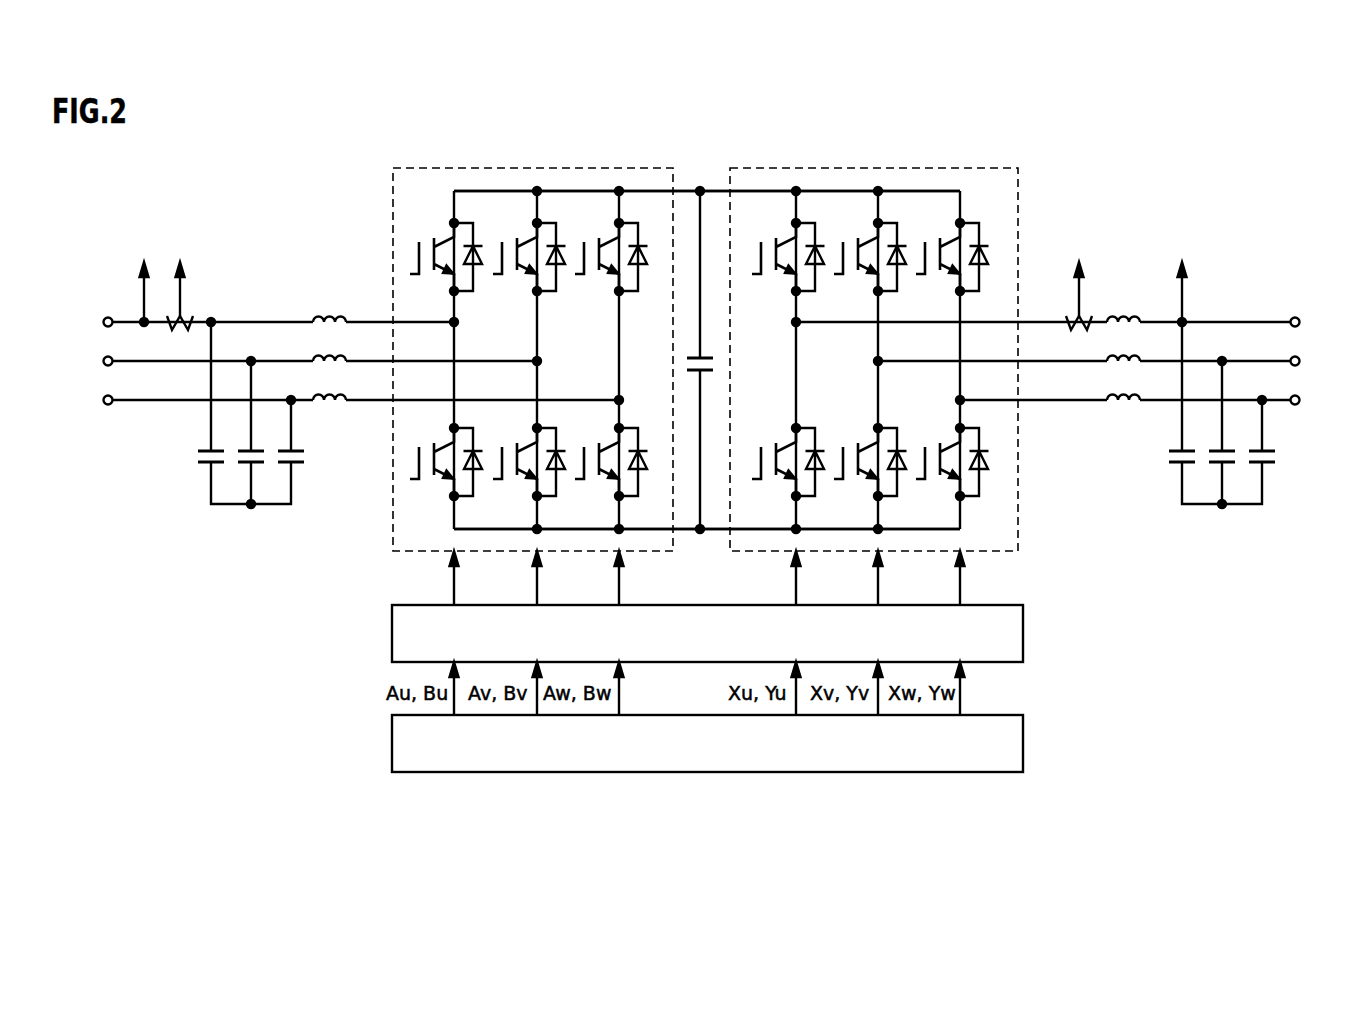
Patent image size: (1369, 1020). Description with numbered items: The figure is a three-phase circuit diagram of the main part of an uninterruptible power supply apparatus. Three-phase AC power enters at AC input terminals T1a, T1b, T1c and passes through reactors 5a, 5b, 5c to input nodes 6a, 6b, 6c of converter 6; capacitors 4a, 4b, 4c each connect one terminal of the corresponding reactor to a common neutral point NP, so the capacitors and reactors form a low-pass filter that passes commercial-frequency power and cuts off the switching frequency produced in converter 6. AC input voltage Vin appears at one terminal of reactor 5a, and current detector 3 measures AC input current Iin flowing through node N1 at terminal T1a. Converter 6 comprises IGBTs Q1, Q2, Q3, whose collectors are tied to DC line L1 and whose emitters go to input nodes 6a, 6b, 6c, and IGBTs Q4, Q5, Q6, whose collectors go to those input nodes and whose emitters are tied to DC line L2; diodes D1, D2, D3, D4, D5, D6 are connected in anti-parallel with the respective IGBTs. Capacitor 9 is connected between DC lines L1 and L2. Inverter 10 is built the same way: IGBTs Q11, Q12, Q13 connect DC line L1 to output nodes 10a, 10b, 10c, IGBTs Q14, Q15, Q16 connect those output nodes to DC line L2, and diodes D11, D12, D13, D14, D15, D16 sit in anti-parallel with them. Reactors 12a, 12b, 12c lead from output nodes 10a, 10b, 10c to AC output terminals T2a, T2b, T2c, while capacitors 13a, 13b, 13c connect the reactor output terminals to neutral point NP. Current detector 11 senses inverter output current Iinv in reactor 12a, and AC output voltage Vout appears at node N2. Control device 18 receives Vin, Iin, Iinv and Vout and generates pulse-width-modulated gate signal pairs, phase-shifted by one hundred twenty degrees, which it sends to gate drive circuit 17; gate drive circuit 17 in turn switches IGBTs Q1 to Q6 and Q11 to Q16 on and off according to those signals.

The AC input terminal T1a is at (104, 316).
The AC input terminal T1b is at (104, 355).
The AC input terminal T1c is at (104, 394).
The node N1 is at (136, 304).
The AC input voltage Vin is at (142, 280).
The AC input current Iin is at (176, 277).
The current detector 3 is at (189, 313).
The capacitor 4a is at (218, 447).
The capacitor 4b is at (258, 447).
The capacitor 4c is at (298, 447).
The neutral point NP is at (251, 509).
The reactor 5a is at (333, 312).
The reactor 5b is at (333, 351).
The reactor 5c is at (333, 390).
The input node 6a is at (392, 320).
The input node 6b is at (392, 359).
The input node 6c is at (392, 398).
The converter 6 is at (537, 167).
The IGBT Q1 is at (445, 237).
The IGBT Q2 is at (528, 237).
The IGBT Q3 is at (610, 237).
The IGBT Q4 is at (445, 442).
The IGBT Q5 is at (528, 442).
The IGBT Q6 is at (610, 442).
The diode D1 is at (481, 268).
The diode D2 is at (564, 268).
The diode D3 is at (646, 268).
The diode D4 is at (481, 473).
The diode D5 is at (564, 473).
The diode D6 is at (646, 473).
The DC line L1 is at (713, 189).
The DC line L2 is at (713, 533).
The capacitor 9 is at (704, 355).
The inverter 10 is at (880, 168).
The IGBT Q11 is at (788, 238).
The IGBT Q12 is at (870, 238).
The IGBT Q13 is at (952, 238).
The IGBT Q14 is at (788, 442).
The IGBT Q15 is at (870, 442).
The IGBT Q16 is at (952, 442).
The diode D11 is at (821, 270).
The diode D12 is at (903, 270).
The diode D13 is at (985, 270).
The diode D14 is at (821, 475).
The diode D15 is at (903, 475).
The diode D16 is at (985, 475).
The output node 10a is at (1022, 321).
The output node 10b is at (1022, 360).
The output node 10c is at (1022, 399).
The current detector 11 is at (1088, 315).
The inverter output current Iinv is at (1080, 277).
The AC output voltage Vout is at (1182, 280).
The reactor 12a is at (1125, 315).
The reactor 12b is at (1125, 355).
The reactor 12c is at (1125, 394).
The node N2 is at (1187, 318).
The AC output terminal T2a is at (1300, 317).
The AC output terminal T2b is at (1300, 356).
The AC output terminal T2c is at (1300, 395).
The capacitor 13a is at (1189, 447).
The capacitor 13b is at (1229, 447).
The capacitor 13c is at (1269, 447).
The gate drive circuit 17 is at (985, 604).
The control device 18 is at (985, 714).